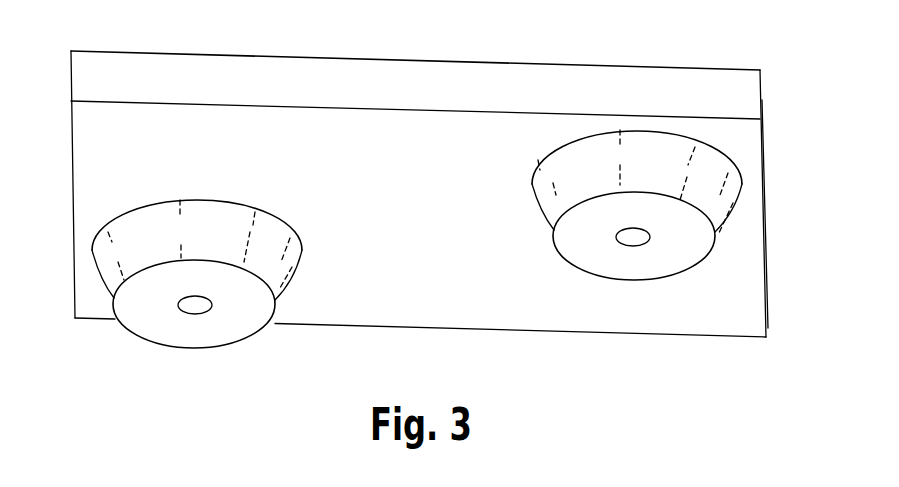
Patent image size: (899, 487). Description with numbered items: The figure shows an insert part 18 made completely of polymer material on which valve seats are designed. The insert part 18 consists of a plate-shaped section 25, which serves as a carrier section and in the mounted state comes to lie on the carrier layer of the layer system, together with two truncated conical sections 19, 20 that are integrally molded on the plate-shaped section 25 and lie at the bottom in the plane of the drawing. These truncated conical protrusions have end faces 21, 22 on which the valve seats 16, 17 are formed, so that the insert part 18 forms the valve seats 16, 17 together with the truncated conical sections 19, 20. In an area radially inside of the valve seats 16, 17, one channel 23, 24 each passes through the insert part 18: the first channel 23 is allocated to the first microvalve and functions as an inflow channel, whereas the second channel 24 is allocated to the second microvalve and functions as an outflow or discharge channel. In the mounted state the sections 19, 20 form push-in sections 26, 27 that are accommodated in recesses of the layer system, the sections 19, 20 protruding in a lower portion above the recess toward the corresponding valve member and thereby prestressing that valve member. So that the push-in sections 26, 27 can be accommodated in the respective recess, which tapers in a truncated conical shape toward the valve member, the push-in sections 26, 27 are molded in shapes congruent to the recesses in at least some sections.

The valve seat 16 is at (160, 302).
The valve seat 17 is at (637, 204).
The insert part 18 is at (342, 84).
The truncated conical section 19 is at (137, 252).
The truncated conical section 20 is at (660, 162).
The end face 21 is at (150, 310).
The end face 22 is at (592, 240).
The first channel 23 is at (197, 308).
The second channel 24 is at (637, 240).
The plate-shaped section 25 is at (421, 90).
The push-in section 26 is at (150, 226).
The push-in section 27 is at (585, 163).